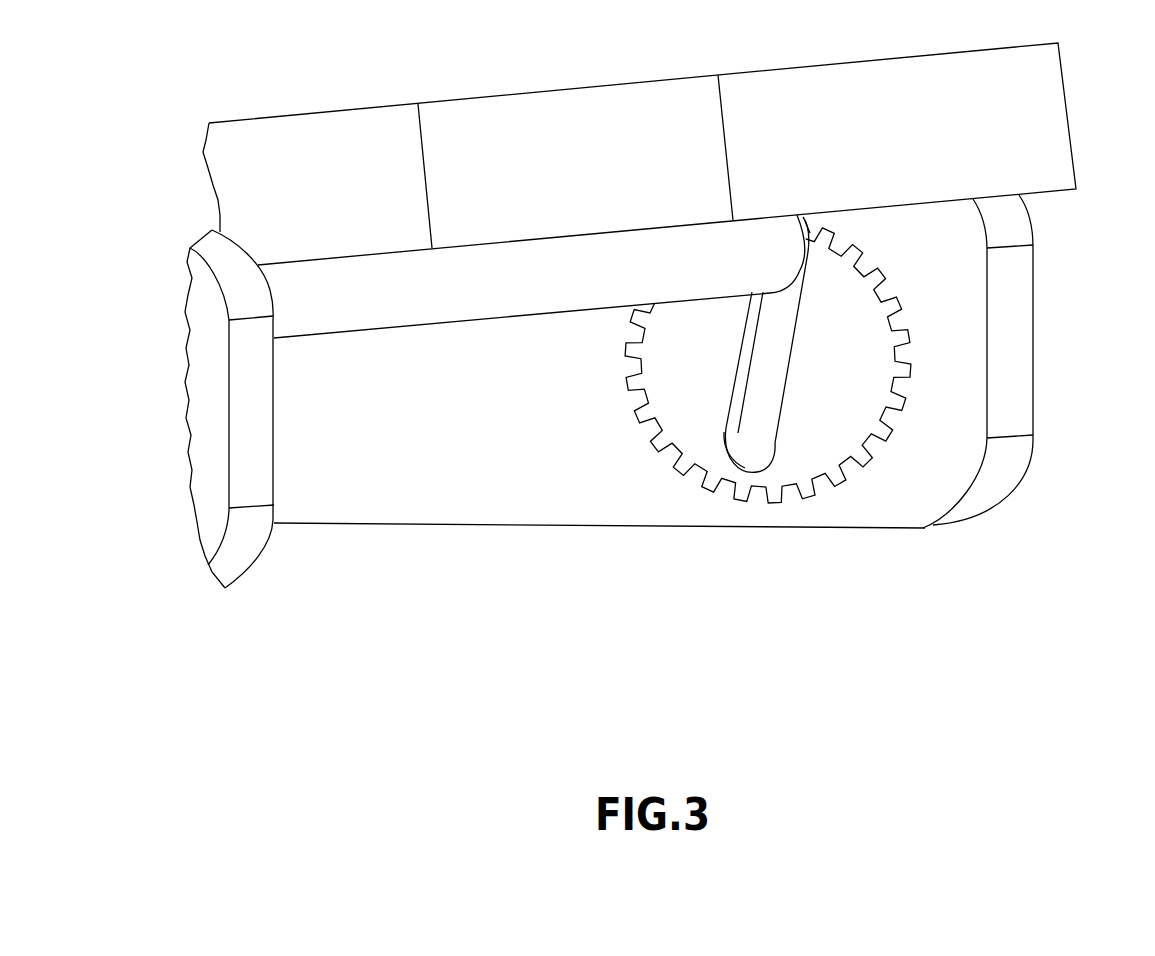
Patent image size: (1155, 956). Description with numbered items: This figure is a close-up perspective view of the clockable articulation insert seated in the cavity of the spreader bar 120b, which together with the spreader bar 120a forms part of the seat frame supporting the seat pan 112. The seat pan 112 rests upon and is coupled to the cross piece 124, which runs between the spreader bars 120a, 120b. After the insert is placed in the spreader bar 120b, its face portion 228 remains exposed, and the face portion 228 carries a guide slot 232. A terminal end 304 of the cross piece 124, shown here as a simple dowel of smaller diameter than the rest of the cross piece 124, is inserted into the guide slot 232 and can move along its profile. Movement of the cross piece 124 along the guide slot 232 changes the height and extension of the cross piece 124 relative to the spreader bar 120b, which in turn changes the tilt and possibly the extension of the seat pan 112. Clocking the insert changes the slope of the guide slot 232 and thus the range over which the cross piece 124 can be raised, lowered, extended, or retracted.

The seat pan 112 is at (480, 230).
The spreader bar 120a is at (253, 470).
The spreader bar 120b is at (970, 367).
The cross piece 124 is at (387, 315).
The face portion 228 is at (855, 425).
The guide slot 232 is at (753, 433).
The terminal end 304 is at (805, 221).